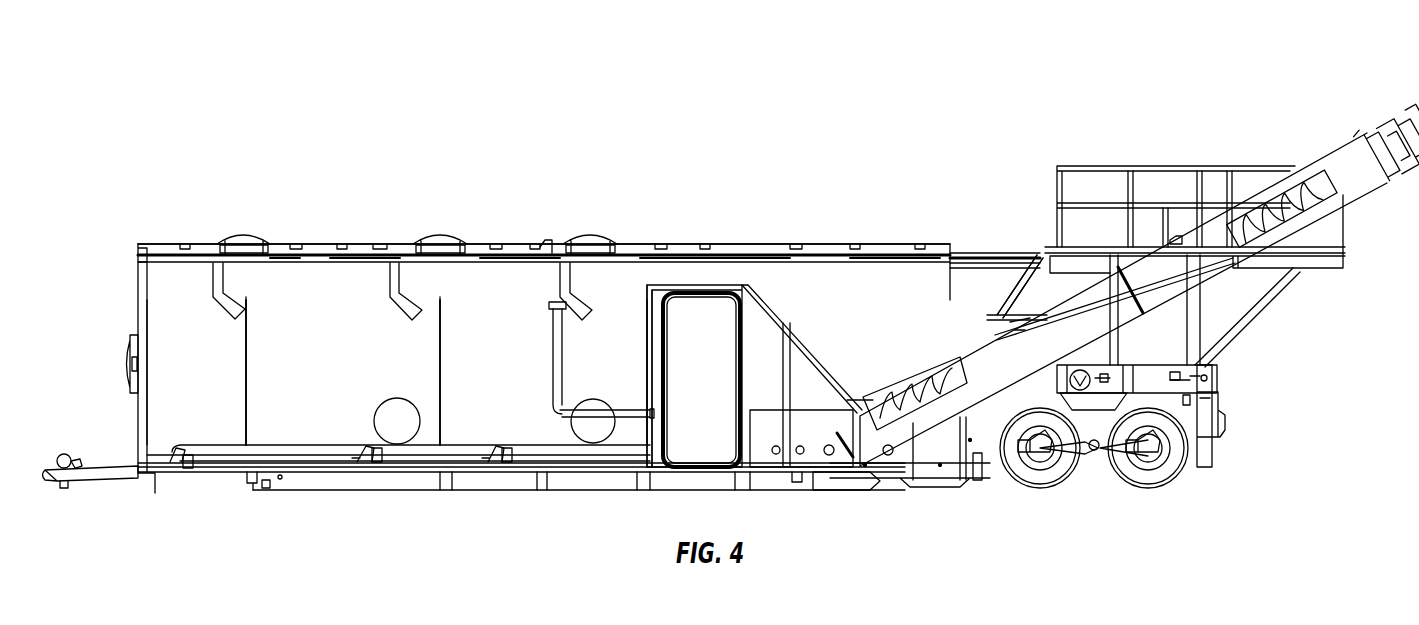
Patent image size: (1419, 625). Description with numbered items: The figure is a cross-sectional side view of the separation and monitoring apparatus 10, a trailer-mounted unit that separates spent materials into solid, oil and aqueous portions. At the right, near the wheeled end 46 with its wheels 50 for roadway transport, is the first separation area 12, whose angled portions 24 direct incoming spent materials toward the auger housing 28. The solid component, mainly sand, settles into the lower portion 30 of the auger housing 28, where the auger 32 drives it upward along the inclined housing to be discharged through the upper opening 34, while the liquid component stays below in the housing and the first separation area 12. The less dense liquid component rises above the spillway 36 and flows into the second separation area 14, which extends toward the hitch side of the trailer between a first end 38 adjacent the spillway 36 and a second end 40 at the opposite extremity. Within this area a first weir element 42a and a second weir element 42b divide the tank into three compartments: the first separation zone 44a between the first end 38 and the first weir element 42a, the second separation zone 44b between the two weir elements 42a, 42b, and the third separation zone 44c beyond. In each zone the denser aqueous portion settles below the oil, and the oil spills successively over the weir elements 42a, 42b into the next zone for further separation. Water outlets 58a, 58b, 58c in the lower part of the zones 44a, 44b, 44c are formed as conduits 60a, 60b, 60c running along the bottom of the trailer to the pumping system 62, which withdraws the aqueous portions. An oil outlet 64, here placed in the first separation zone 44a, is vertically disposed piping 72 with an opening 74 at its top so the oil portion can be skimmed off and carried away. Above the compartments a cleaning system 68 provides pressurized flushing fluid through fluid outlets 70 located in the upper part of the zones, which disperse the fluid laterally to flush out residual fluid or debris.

The separation and monitoring apparatus 10 is at (924, 70).
The first separation area 12 is at (883, 321).
The second separation area 14 is at (503, 263).
The angled portions 24 is at (770, 312).
The auger housing 28 is at (1177, 245).
The lower portion of the auger housing 30 is at (913, 427).
The auger 32 is at (1293, 225).
The upper opening 34 is at (1297, 202).
The spillway 36 is at (700, 284).
The first end 38 is at (643, 378).
The second end 40 is at (148, 400).
The first weir element 42a is at (442, 380).
The second weir element 42b is at (247, 382).
The first separation zone 44a is at (470, 413).
The second separation zone 44b is at (286, 413).
The third separation zone 44c is at (187, 380).
The wheeled end 46 is at (1215, 380).
The wheels 50 is at (1043, 490).
The water outlet 58a is at (490, 458).
The water outlet 58b is at (357, 457).
The water outlet 58c is at (170, 458).
The conduit 60a is at (510, 462).
The conduit 60b is at (383, 460).
The conduit 60c is at (187, 465).
The pumping system 62 is at (767, 437).
The oil outlet 64 is at (553, 368).
The cleaning system 68 is at (243, 268).
The fluid outlets 70 is at (243, 317).
The vertically disposed piping 72 is at (567, 392).
The opening 74 is at (548, 258).